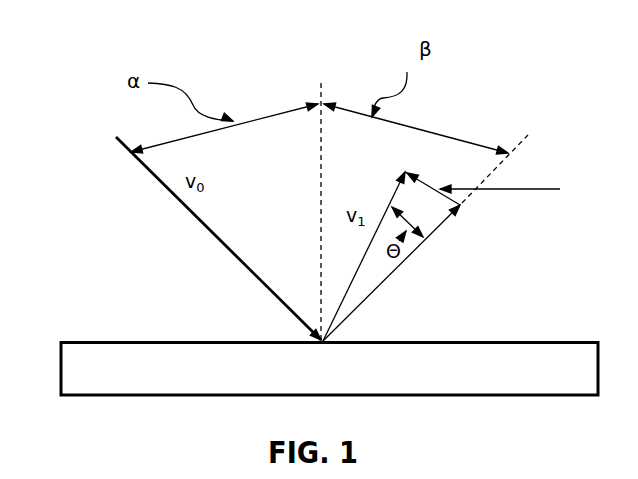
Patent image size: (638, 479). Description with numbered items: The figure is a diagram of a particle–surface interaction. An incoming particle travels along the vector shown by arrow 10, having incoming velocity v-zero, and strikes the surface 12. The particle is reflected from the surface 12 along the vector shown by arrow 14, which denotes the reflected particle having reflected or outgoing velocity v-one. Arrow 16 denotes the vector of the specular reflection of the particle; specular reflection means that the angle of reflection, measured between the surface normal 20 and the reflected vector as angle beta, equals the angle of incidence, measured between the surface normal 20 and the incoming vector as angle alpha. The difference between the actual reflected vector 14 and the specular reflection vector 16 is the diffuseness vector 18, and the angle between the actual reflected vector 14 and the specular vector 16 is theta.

The arrow 10 is at (143, 168).
The surface 12 is at (512, 341).
The arrow 14 is at (388, 188).
The arrow 16 is at (392, 282).
The diffuseness vector 18 is at (520, 175).
The surface normal 20 is at (321, 132).